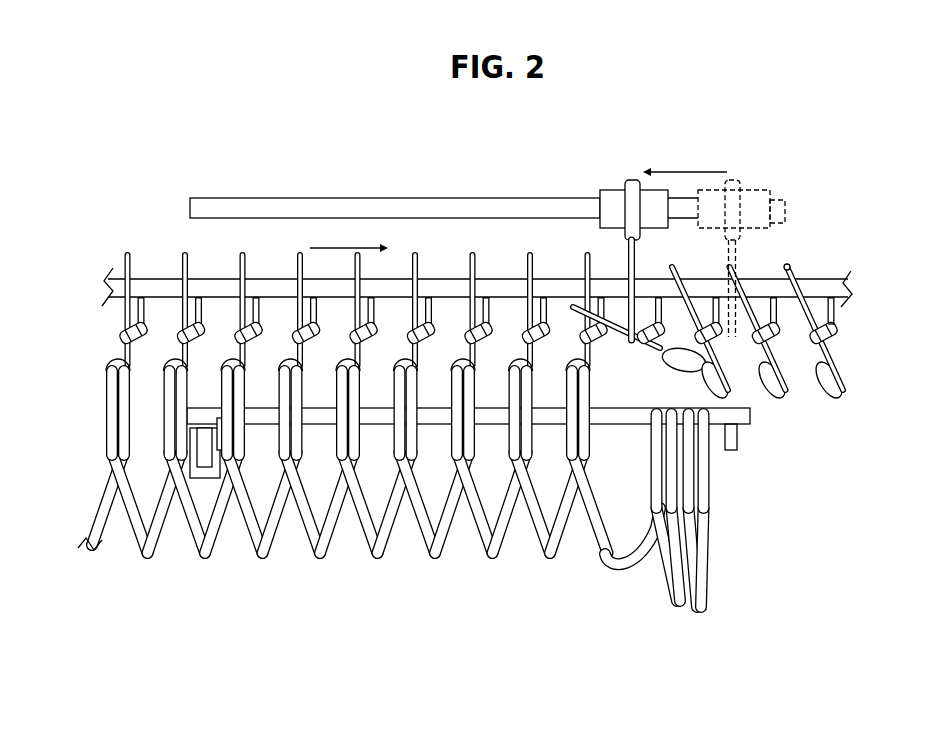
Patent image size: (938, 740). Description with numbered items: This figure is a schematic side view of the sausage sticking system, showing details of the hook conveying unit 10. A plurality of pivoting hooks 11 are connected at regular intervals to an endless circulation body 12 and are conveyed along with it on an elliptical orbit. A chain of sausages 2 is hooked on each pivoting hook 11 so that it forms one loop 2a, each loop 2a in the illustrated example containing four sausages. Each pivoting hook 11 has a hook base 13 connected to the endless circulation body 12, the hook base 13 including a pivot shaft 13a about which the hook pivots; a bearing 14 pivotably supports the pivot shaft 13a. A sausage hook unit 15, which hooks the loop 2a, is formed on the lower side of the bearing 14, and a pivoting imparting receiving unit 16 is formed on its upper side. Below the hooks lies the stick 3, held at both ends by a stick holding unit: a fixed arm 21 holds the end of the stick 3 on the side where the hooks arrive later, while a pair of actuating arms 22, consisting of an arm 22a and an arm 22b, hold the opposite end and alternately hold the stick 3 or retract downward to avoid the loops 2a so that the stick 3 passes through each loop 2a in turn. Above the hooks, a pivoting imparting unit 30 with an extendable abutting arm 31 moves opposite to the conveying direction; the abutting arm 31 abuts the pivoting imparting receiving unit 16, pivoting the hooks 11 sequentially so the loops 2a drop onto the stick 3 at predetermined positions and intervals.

The chain of sausages 2 is at (486, 545).
The loop 2a is at (106, 437).
The stick 3 is at (622, 424).
The hook conveying unit 10 is at (838, 265).
The pivoting hook 11 is at (789, 410).
The endless circulation body 12 is at (806, 290).
The hook base 13 is at (838, 312).
The pivot shaft 13a is at (838, 334).
The bearing 14 is at (836, 350).
The sausage hook unit 15 is at (836, 386).
The pivoting imparting receiving unit 16 is at (784, 268).
The fixed arm 21 is at (732, 452).
The pair of actuating arms 22 is at (248, 598).
The arm 22a is at (190, 478).
The arm 22b is at (229, 452).
The pivoting imparting unit 30 is at (591, 189).
The abutting arm 31 is at (626, 263).